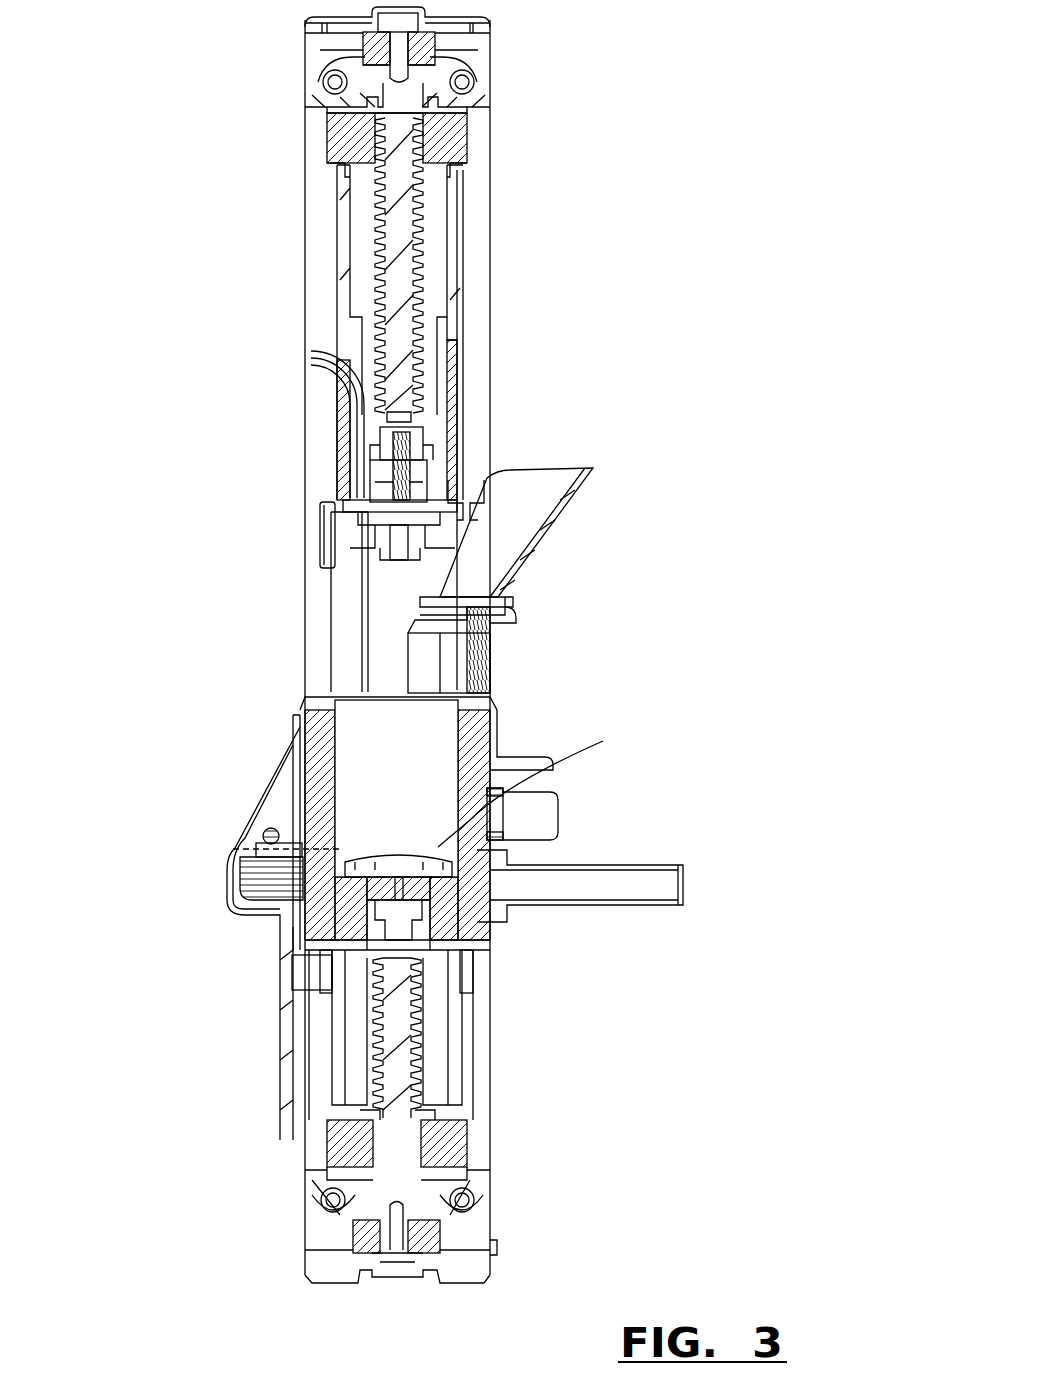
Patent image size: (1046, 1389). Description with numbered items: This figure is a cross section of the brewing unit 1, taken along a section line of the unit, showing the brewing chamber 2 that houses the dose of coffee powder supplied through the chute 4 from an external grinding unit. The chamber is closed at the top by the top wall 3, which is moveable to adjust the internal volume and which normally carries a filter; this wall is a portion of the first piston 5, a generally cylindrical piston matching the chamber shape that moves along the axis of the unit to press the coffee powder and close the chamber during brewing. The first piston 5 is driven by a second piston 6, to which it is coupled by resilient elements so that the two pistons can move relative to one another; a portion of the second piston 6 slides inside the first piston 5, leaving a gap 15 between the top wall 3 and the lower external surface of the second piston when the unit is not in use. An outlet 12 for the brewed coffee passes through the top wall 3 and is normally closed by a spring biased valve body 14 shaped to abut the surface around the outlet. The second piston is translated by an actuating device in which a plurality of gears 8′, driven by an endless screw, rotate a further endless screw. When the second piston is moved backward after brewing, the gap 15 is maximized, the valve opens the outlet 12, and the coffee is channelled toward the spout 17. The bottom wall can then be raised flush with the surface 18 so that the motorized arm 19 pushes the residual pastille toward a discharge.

The brewing unit 1 is at (612, 340).
The brewing chamber 2 is at (407, 797).
The top wall 3 is at (362, 583).
The chute 4 is at (507, 528).
The first piston 5 is at (450, 440).
The second piston 6 is at (452, 290).
The plurality of gears 8′ is at (420, 43).
The outlet 12 is at (374, 544).
The valve body 14 is at (380, 497).
The gap 15 is at (330, 505).
The spout 17 is at (338, 356).
The surface 18 is at (315, 693).
The motorized arm 19 is at (441, 656).